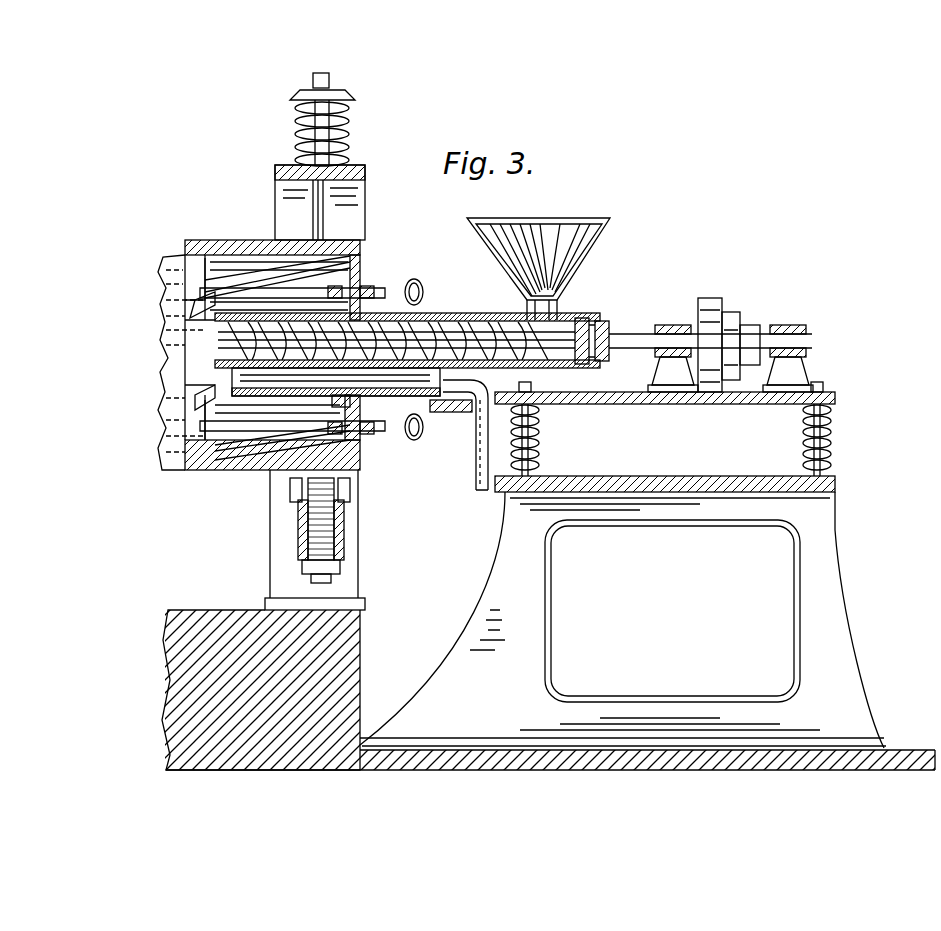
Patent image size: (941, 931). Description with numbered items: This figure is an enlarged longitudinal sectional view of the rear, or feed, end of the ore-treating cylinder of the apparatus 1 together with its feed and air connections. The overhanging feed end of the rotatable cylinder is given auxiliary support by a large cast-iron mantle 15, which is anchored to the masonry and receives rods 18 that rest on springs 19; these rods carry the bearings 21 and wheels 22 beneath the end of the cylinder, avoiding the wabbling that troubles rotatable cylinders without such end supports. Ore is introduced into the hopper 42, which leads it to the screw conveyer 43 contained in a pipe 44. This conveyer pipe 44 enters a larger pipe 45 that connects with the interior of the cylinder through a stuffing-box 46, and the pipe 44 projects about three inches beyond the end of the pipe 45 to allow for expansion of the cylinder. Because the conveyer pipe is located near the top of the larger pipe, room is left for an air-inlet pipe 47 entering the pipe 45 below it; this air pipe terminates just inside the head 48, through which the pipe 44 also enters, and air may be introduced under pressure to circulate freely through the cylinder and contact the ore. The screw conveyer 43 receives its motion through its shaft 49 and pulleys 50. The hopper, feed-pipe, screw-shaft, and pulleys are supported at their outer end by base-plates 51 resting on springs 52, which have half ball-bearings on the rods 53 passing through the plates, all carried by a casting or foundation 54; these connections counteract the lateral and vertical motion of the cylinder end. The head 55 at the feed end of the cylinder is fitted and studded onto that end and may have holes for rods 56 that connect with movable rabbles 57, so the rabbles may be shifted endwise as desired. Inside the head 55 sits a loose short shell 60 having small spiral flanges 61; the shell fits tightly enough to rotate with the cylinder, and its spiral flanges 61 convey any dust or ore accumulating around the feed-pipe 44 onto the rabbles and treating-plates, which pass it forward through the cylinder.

The apparatus 1 is at (178, 663).
The mantle 15 is at (360, 546).
The rods 18 is at (324, 232).
The springs 19 is at (347, 134).
The bearings 21 is at (290, 498).
The wheels 22 is at (310, 516).
The hopper 42 is at (546, 228).
The screw conveyer 43 is at (388, 370).
The pipe 44 is at (460, 326).
The larger pipe 45 is at (428, 418).
The stuffing-box 46 is at (395, 304).
The air-inlet pipe 47 is at (470, 492).
The head 48 is at (440, 408).
The shaft 49 is at (616, 342).
The pulleys 50 is at (712, 308).
The base-plates 51 is at (604, 402).
The springs 52 is at (540, 434).
The rods 53 is at (533, 400).
The foundation 54 is at (620, 480).
The head 55 is at (352, 272).
The rods 56 is at (412, 280).
The rabbles 57 is at (187, 275).
The loose short shell 60 is at (238, 258).
The spiral flanges 61 is at (232, 462).